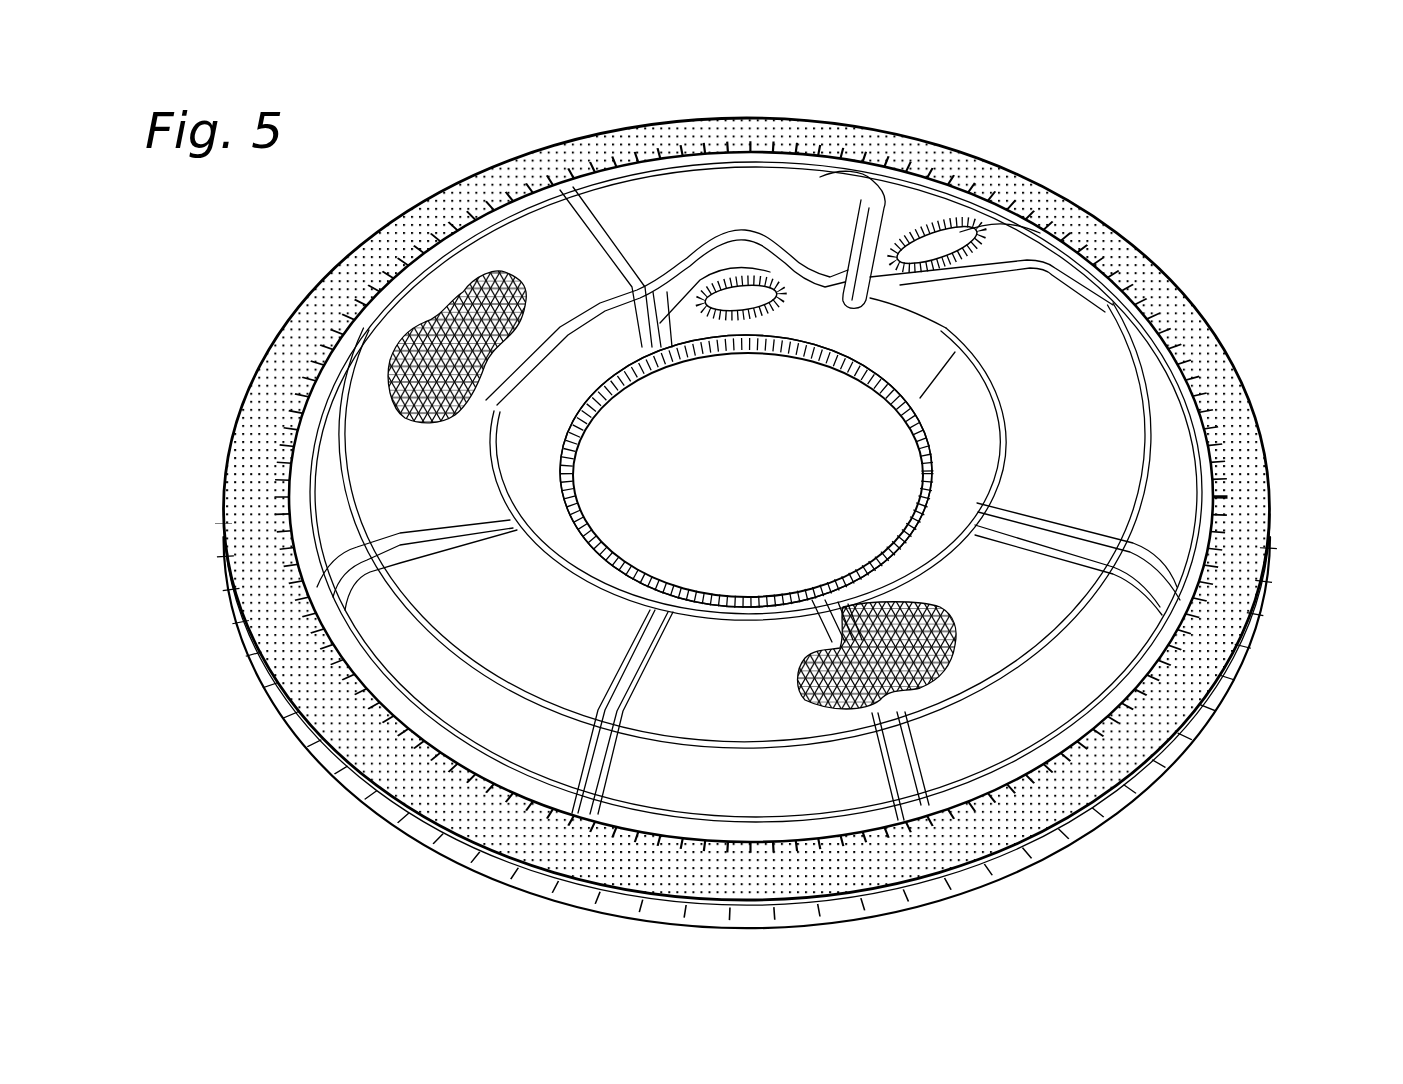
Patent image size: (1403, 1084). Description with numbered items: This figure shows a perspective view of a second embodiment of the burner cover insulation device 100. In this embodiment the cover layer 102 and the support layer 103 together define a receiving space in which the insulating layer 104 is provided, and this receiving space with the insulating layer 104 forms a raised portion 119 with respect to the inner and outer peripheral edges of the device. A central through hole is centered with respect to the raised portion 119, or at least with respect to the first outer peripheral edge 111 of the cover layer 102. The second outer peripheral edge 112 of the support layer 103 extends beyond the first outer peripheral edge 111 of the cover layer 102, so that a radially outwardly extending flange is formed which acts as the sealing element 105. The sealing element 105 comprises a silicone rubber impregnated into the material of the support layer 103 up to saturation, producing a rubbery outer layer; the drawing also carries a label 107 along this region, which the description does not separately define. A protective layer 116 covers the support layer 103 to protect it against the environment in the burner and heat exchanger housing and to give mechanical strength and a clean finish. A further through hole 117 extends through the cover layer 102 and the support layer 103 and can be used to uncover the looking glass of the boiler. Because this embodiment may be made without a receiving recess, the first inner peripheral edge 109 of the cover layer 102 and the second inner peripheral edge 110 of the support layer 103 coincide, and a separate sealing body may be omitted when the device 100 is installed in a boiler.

The burner cover insulation device 100 is at (747, 508).
The cover layer 102 is at (784, 674).
The support layer 103 is at (597, 400).
The insulating layer 104 is at (487, 213).
The sealing element 105 is at (1188, 352).
The hub ridge teeth 107 is at (816, 345).
The first inner peripheral edge 109 is at (628, 374).
The second inner peripheral edge 110 is at (746, 471).
The first outer peripheral edge 111 is at (1053, 722).
The second outer peripheral edge 112 is at (1013, 827).
The protective layer 116 is at (794, 692).
The further through hole 117 is at (985, 240).
The raised portion 119 is at (640, 215).